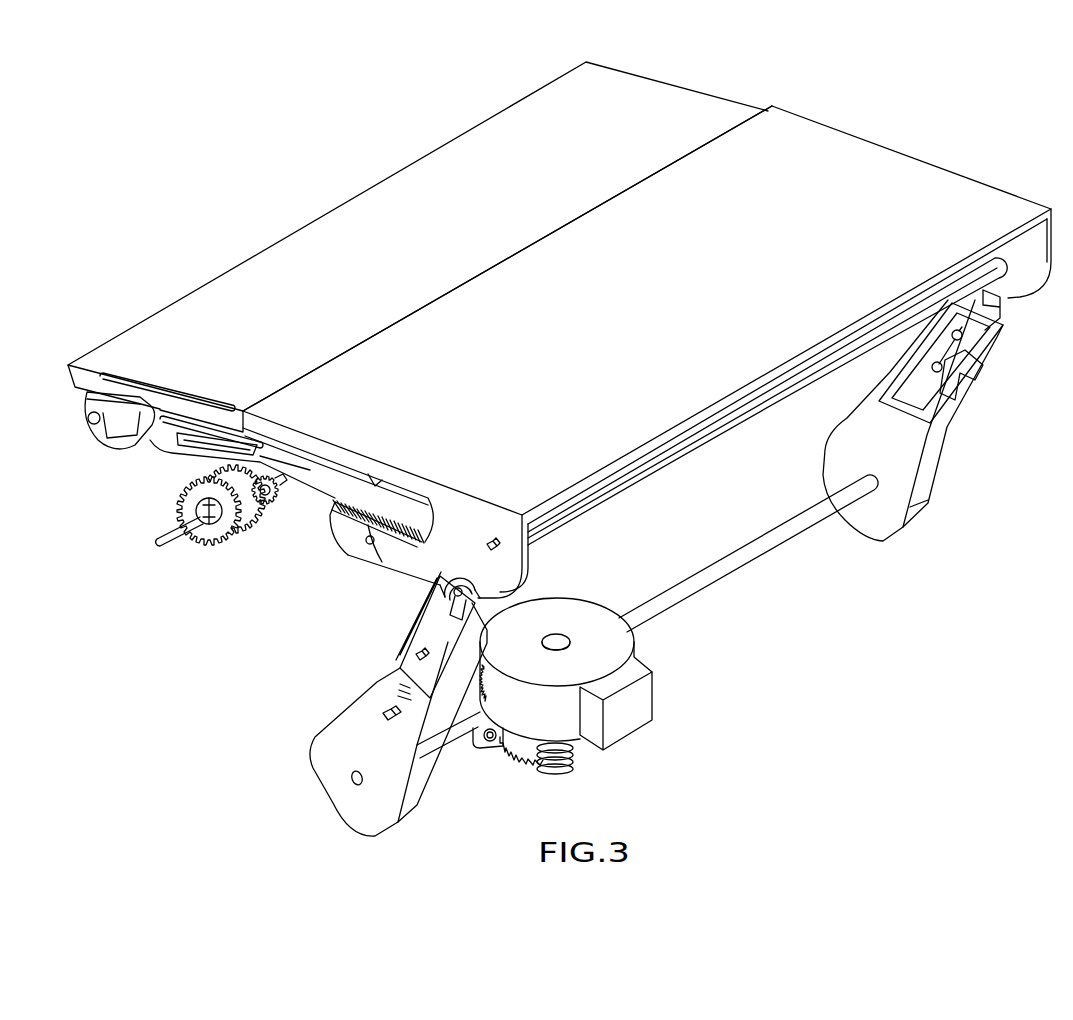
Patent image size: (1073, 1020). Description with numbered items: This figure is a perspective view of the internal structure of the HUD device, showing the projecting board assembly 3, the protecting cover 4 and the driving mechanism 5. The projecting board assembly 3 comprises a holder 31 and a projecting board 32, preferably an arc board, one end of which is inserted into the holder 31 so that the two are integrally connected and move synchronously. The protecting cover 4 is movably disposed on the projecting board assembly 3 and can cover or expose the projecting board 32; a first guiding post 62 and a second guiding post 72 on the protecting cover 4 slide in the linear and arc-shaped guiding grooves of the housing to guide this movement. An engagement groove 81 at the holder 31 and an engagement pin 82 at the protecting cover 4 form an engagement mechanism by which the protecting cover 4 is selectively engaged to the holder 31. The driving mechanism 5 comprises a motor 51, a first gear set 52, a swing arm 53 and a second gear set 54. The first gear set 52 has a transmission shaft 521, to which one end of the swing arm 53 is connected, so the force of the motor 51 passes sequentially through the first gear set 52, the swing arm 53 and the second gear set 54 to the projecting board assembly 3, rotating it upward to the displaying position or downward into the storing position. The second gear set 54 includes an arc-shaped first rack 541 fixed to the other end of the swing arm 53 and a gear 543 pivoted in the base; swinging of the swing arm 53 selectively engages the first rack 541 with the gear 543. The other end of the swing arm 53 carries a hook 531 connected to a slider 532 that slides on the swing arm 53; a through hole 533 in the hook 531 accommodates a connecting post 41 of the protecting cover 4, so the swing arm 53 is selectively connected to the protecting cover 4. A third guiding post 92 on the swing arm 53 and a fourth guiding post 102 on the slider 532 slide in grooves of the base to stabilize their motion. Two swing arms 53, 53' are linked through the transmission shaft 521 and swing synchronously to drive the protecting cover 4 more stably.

The projecting board assembly 3 is at (371, 181).
The holder 31 is at (470, 190).
The protecting cover 4 is at (956, 170).
The projecting board 32 is at (597, 499).
The engagement groove 81 is at (224, 402).
The engagement pin 82 is at (383, 483).
The second guiding post 72 is at (369, 501).
The first rack 541 is at (348, 525).
The first guiding post 62 is at (498, 542).
The gear 543 is at (260, 518).
The second gear set 54 is at (195, 557).
The driving mechanism 5 is at (550, 662).
The swing arm 53 is at (388, 726).
The slider 532 is at (420, 637).
The connecting post 41 is at (418, 613).
The hook 531 is at (440, 588).
The through hole 533 is at (456, 598).
The fourth guiding post 102 is at (414, 657).
The third guiding post 92 is at (383, 715).
The motor 51 is at (640, 703).
The first gear set 52 is at (580, 766).
The transmission shaft 521 is at (740, 565).
The swing arm 53' is at (913, 423).